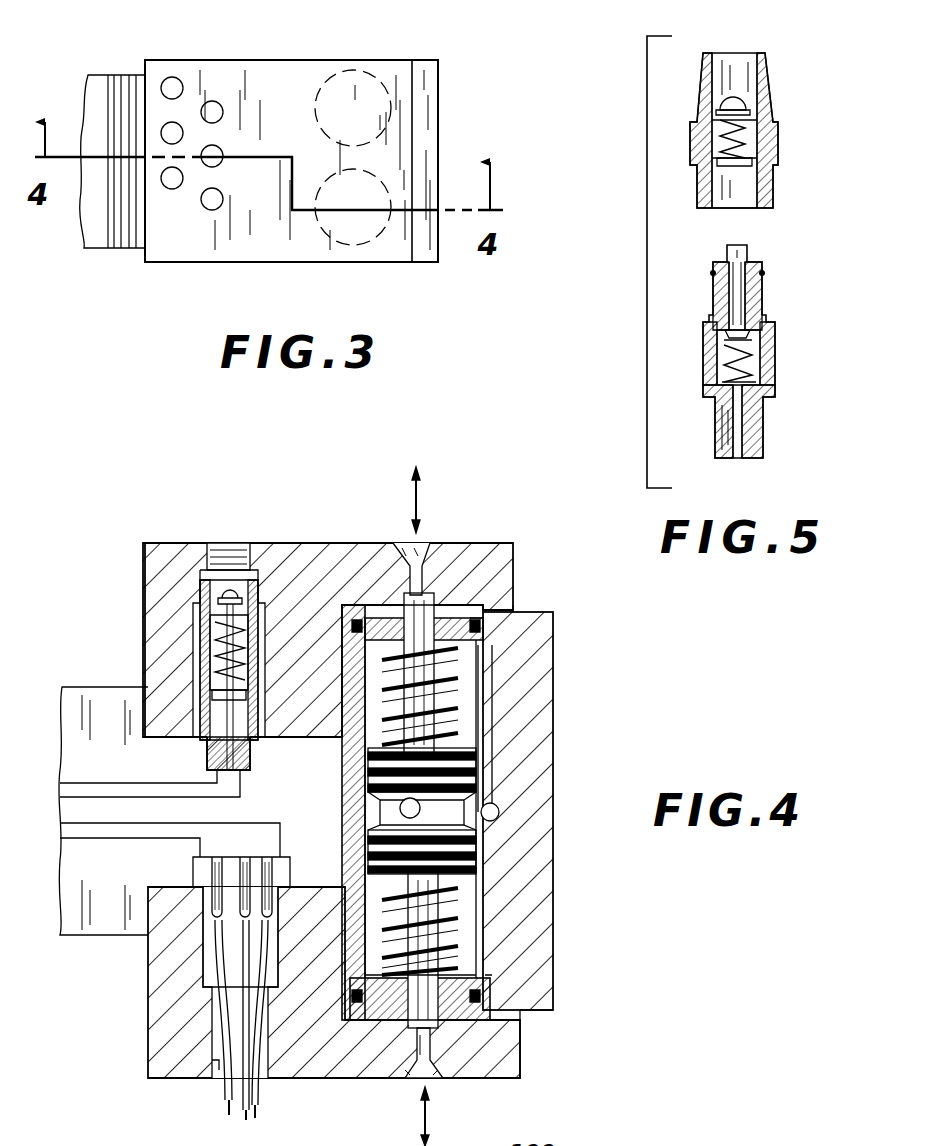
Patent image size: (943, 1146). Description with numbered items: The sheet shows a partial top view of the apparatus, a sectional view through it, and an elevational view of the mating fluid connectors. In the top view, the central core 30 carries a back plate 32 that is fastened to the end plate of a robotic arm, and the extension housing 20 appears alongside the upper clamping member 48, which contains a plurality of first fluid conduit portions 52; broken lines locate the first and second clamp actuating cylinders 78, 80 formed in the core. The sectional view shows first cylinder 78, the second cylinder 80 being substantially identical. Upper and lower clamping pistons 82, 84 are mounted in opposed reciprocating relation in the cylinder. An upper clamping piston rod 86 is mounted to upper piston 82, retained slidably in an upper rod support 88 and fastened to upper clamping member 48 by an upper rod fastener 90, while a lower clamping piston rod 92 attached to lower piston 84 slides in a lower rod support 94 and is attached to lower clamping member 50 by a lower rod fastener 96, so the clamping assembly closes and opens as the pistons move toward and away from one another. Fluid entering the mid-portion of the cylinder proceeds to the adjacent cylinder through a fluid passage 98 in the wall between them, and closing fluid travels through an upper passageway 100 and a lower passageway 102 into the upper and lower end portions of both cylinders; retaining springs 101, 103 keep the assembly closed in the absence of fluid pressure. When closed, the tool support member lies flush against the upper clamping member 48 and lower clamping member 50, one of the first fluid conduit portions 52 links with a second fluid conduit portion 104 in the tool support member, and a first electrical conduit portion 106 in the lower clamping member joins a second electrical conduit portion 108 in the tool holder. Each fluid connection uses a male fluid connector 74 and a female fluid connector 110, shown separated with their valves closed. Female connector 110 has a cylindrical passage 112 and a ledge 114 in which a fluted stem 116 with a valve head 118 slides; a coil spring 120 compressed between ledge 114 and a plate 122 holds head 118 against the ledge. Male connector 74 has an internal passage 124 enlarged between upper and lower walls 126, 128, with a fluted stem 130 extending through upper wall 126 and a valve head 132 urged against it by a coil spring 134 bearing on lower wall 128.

In FIG. 3, the extension housing 20 is at (95, 85).
In FIG. 4, the central core 30 is at (535, 702).
In FIG. 3, the back plate 32 is at (430, 106).
In FIG. 3, the upper clamping member 48 is at (275, 70).
In FIG. 4, the upper clamping member 48 is at (166, 548).
In FIG. 4, the lower clamping member 50 is at (172, 989).
In FIG. 3, the first fluid conduit portions 52 is at (173, 78).
In FIG. 4, the first fluid conduit portions 52 is at (236, 556).
In FIG. 5, the male fluid connector 74 is at (743, 351).
In FIG. 3, the first clamp actuating cylinder 78 is at (362, 238).
In FIG. 4, the first clamp actuating cylinder 78 is at (495, 668).
In FIG. 3, the second clamp actuating cylinder 80 is at (368, 85).
In FIG. 4, the upper clamping piston 82 is at (375, 742).
In FIG. 4, the lower clamping piston 84 is at (470, 852).
In FIG. 4, the upper clamping piston rod 86 is at (432, 550).
In FIG. 4, the upper rod support 88 is at (505, 602).
In FIG. 4, the upper rod fastener 90 is at (430, 548).
In FIG. 4, the lower clamping piston rod 92 is at (430, 905).
In FIG. 4, the lower rod support 94 is at (470, 1013).
In FIG. 4, the lower rod fastener 96 is at (430, 1075).
In FIG. 4, the fluid passage 98 is at (400, 808).
In FIG. 4, the upper passageway 100 is at (497, 733).
In FIG. 4, the retaining spring 101 is at (495, 750).
In FIG. 4, the lower passageway 102 is at (500, 975).
In FIG. 4, the retaining spring 103 is at (470, 962).
In FIG. 4, the second fluid conduit portions 104 is at (236, 784).
In FIG. 4, the first electrical conduit portion 106 is at (216, 1072).
In FIG. 4, the second electrical conduit portion 108 is at (278, 839).
In FIG. 5, the female fluid connector 110 is at (739, 118).
In FIG. 5, the cylindrical passage 112 is at (755, 85).
In FIG. 5, the ledge 114 is at (765, 118).
In FIG. 5, the fluted stem 116 is at (745, 140).
In FIG. 5, the valve head 118 is at (733, 97).
In FIG. 5, the coil spring 120 is at (742, 164).
In FIG. 5, the plate 122 is at (715, 182).
In FIG. 5, the internal passage 124 is at (755, 374).
In FIG. 5, the upper wall 126 is at (728, 332).
In FIG. 5, the lower wall 128 is at (712, 395).
In FIG. 5, the fluted stem 130 is at (745, 297).
In FIG. 5, the valve head 132 is at (750, 346).
In FIG. 5, the coil spring 134 is at (748, 386).